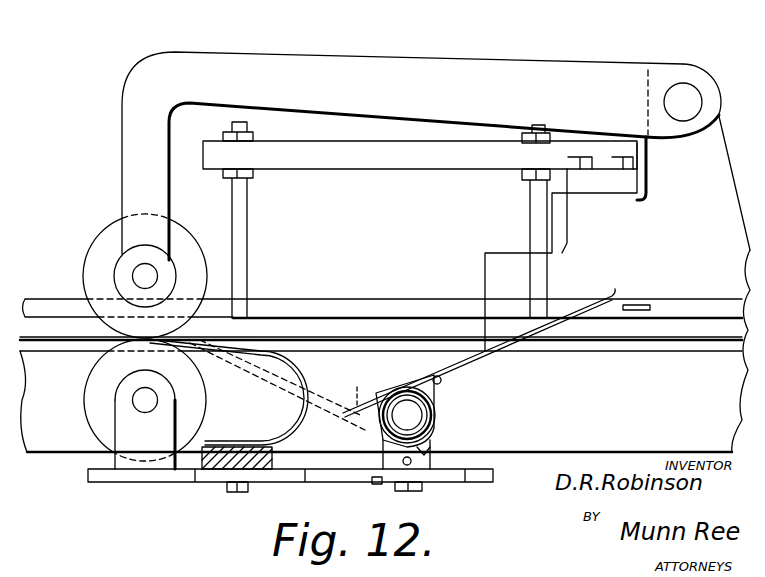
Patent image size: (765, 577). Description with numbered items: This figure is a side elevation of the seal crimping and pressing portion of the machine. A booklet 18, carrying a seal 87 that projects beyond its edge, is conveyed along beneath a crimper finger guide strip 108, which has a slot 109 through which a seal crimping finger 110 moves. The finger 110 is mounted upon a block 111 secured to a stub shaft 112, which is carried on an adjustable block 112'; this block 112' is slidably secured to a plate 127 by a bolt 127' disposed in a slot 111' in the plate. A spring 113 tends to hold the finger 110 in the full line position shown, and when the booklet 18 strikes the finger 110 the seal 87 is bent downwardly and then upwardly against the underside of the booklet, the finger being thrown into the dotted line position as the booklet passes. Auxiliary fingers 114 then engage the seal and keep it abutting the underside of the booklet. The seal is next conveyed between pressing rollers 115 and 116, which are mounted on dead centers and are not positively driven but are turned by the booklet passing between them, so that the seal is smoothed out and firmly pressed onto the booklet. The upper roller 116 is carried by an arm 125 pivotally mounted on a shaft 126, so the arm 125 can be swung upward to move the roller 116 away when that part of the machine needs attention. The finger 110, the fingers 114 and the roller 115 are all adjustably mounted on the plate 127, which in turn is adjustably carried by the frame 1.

The frame 1 is at (740, 228).
The booklet 18 is at (658, 322).
The seal 87 is at (624, 317).
The crimper finger guide strip 108 is at (692, 302).
The slot 109 is at (432, 320).
The seal crimping finger 110 is at (612, 298).
The block 111 is at (389, 417).
The slot 111' is at (352, 491).
The stub shaft 112 is at (439, 415).
The adjustable block 112' is at (281, 393).
The spring 113 is at (442, 389).
The auxiliary fingers 114 is at (290, 360).
The pressing roller 115 is at (103, 385).
The pressing roller 116 is at (92, 258).
The arm 125 is at (475, 72).
The shaft 126 is at (680, 92).
The plate 127 is at (294, 459).
The bolt 127' is at (445, 494).